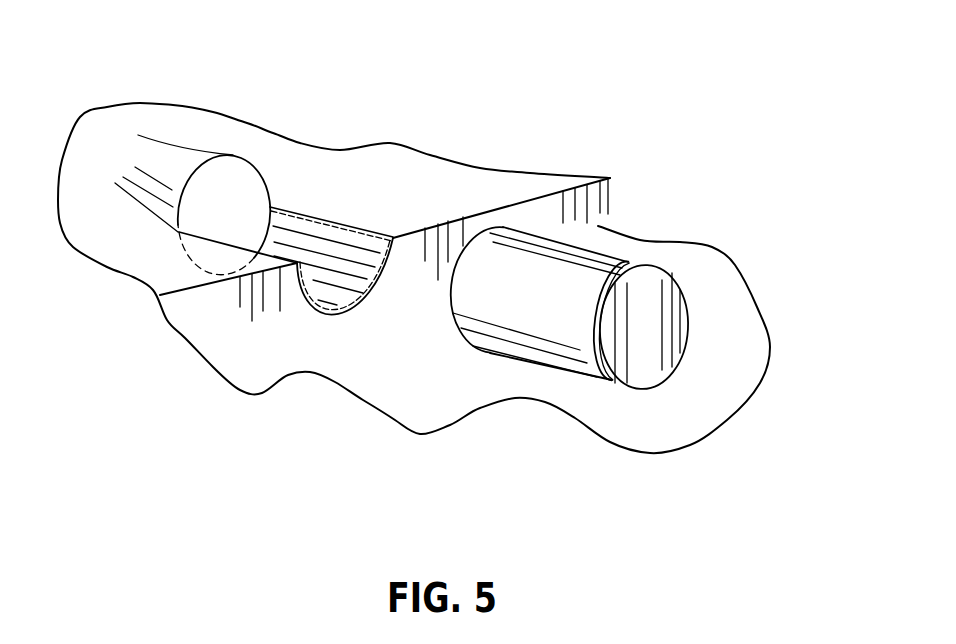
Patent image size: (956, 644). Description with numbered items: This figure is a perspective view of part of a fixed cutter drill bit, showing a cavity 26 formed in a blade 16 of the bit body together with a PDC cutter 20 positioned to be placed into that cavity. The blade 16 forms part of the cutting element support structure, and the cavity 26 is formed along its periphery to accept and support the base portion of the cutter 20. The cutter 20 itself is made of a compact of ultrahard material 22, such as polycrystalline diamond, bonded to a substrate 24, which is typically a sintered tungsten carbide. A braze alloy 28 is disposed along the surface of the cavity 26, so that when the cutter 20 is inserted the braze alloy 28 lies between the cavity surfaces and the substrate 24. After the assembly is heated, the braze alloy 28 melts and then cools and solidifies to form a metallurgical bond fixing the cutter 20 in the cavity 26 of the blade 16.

The blade 16 is at (497, 182).
The PDC cutter 20 is at (649, 255).
The ultrahard material compact 22 is at (655, 307).
The substrate 24 is at (563, 260).
The cavity 26 is at (387, 212).
The braze alloy 28 is at (340, 226).